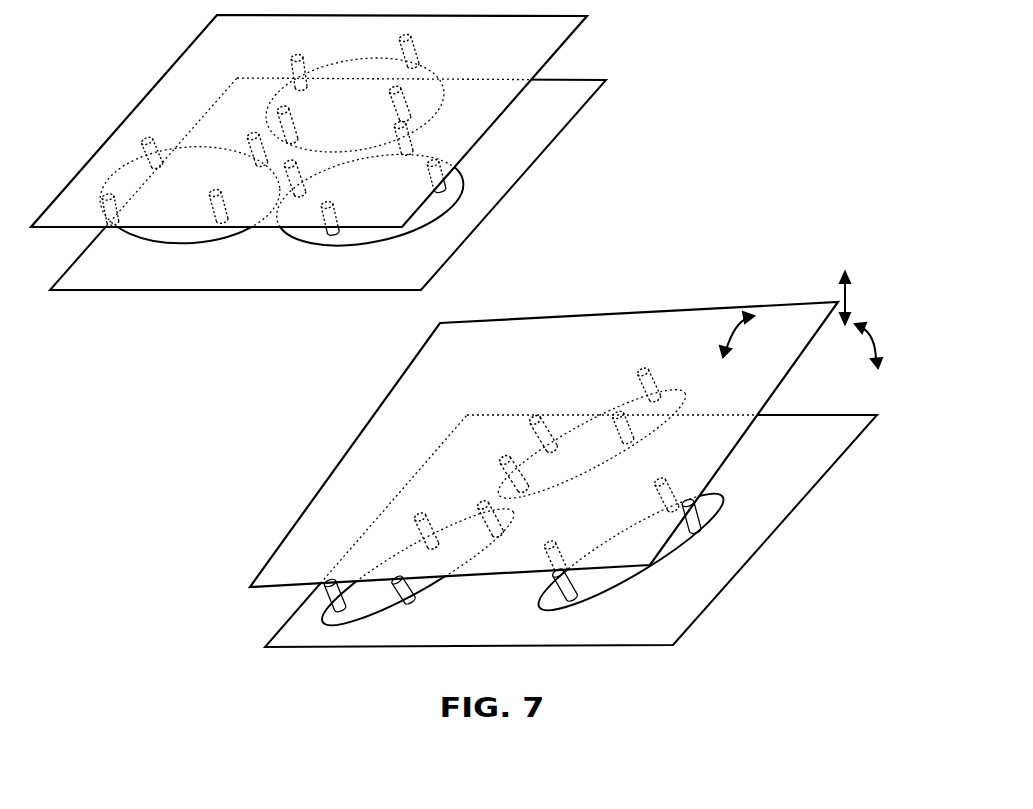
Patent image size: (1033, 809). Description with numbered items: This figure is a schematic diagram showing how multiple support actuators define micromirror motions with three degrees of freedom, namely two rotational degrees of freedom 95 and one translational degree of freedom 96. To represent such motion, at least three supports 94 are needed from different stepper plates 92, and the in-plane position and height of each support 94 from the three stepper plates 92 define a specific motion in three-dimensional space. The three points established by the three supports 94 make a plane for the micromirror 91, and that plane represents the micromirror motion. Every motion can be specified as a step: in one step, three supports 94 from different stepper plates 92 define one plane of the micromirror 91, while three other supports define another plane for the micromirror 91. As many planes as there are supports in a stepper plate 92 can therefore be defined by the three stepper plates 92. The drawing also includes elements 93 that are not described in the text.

The micromirror 91 is at (527, 90).
The stepper plate 92 is at (463, 193).
The pins (contact elements) 93 is at (331, 226).
The support 94 is at (625, 413).
The rotational degrees of freedom 95 is at (855, 338).
The translational degree of freedom 96 is at (855, 290).